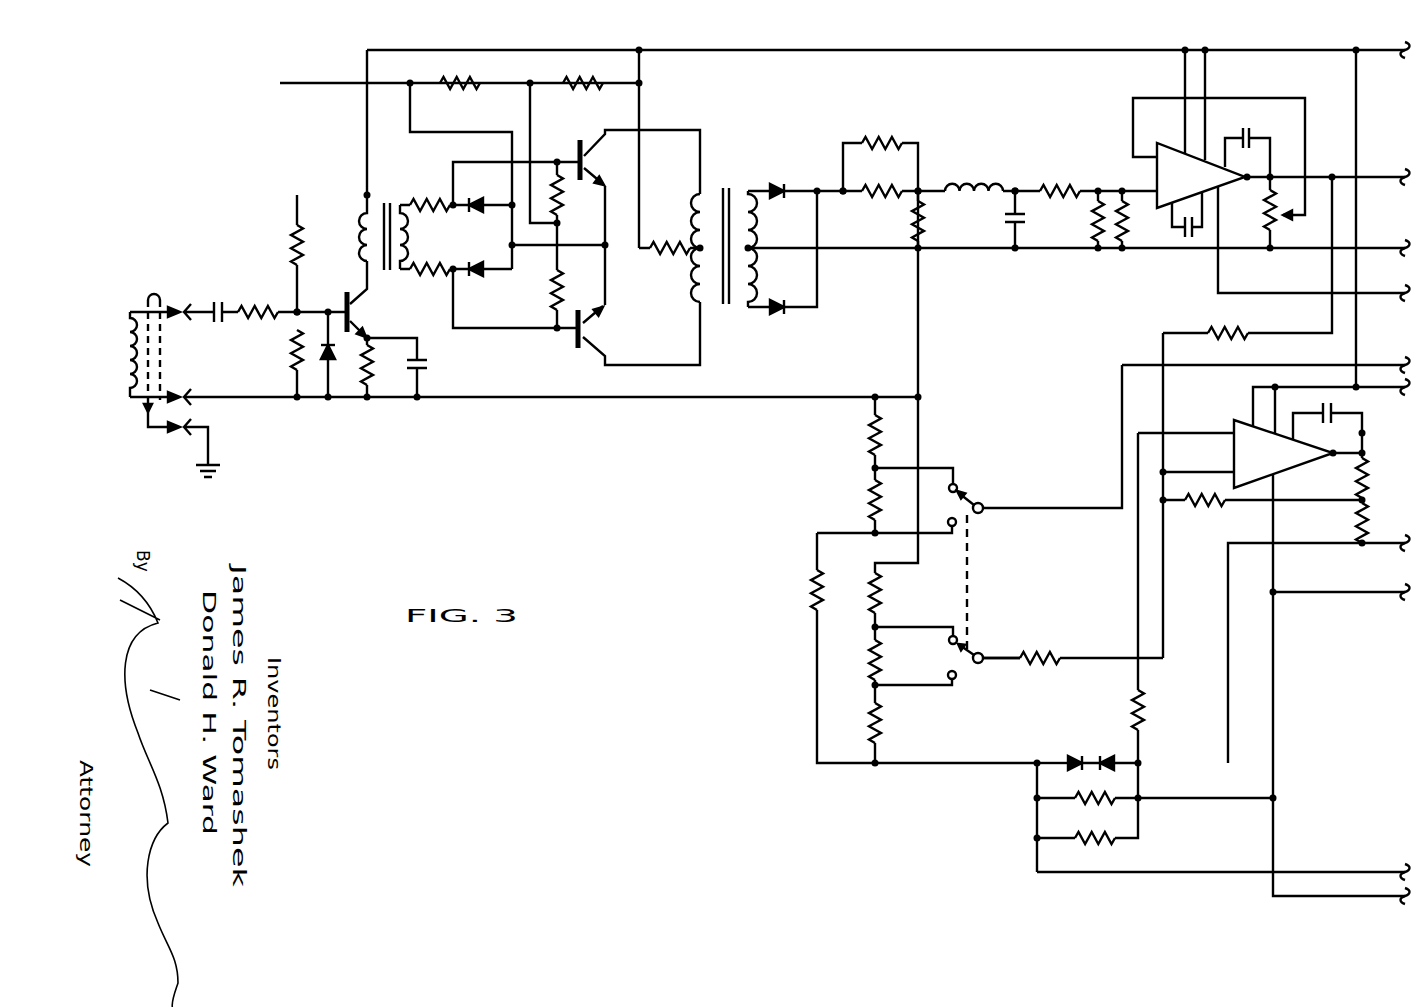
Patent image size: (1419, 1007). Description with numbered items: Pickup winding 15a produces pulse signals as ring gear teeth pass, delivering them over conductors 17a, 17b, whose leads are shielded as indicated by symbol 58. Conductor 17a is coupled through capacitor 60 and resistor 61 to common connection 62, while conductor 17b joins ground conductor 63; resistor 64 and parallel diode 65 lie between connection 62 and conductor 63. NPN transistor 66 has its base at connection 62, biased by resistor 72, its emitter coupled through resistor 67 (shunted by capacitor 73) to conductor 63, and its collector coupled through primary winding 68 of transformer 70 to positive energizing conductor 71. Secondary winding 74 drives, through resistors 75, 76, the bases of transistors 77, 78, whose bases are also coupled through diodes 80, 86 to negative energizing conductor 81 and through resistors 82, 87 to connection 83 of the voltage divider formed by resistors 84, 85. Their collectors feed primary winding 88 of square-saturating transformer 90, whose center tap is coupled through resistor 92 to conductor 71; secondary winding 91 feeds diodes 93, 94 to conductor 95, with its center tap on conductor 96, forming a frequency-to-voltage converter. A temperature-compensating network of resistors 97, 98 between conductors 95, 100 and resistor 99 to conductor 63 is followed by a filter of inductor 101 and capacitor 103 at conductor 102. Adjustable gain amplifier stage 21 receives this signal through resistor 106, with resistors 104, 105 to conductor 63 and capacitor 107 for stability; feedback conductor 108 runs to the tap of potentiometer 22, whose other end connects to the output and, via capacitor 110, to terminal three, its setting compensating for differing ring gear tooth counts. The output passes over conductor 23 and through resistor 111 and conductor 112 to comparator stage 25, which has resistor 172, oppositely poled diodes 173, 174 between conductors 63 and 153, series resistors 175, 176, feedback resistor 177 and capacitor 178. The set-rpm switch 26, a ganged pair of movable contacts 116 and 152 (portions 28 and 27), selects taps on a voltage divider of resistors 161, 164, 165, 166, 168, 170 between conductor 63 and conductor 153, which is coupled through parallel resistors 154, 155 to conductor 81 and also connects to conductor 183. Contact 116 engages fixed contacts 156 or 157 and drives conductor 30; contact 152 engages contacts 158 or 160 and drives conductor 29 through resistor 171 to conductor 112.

The winding 15a is at (122, 347).
The shielding 58 is at (162, 360).
The conductor 17a is at (189, 305).
The conductor 17b is at (192, 404).
The capacitor 60 is at (217, 306).
The resistor 61 is at (292, 301).
The common connection 62 is at (297, 312).
The common conductor 63 is at (1040, 251).
The resistor 64 is at (282, 363).
The diode 65 is at (339, 354).
The NPN-type transistor 66 is at (364, 299).
The resistor 67 is at (381, 367).
The primary winding 68 is at (350, 228).
The transformer 70 is at (398, 196).
The positive energizing conductor 71 is at (793, 50).
The resistor 72 is at (284, 253).
The capacitor 73 is at (409, 367).
The secondary winding 74 is at (420, 237).
The resistor 75 is at (426, 197).
The resistor 76 is at (426, 281).
The NPN-type transistor 77 is at (640, 162).
The NPN-type transistor 78 is at (639, 333).
The diode 80 is at (482, 193).
The negative energizing conductor 81 is at (328, 83).
The resistor 82 is at (569, 216).
The common connection 83 is at (529, 82).
The resistor 84 is at (460, 94).
The resistor 85 is at (583, 94).
The diode 86 is at (482, 281).
The resistor 87 is at (569, 299).
The primary winding 88 is at (697, 233).
The transformer 90 is at (739, 177).
The secondary winding 91 is at (760, 284).
The resistor 92 is at (669, 258).
The diode 93 is at (795, 179).
The diode 94 is at (782, 264).
The conductor 95 is at (840, 188).
The conductor 96 is at (942, 251).
The resistor 97 is at (880, 153).
The resistor 98 is at (880, 203).
The resistor 99 is at (930, 219).
The conductor 100 is at (920, 188).
The choke or inductor 101 is at (987, 172).
The conductor 102 is at (1016, 188).
The capacitor 103 is at (998, 219).
The resistor 104 is at (1080, 219).
The resistor 105 is at (1138, 219).
The resistor 106 is at (1086, 182).
The capacitor 107 is at (1176, 237).
The conductor 108 is at (1290, 98).
The capacitor 110 is at (1248, 141).
The adjustable gain amplifier stage 21 is at (1168, 130).
The potentiometer 22 is at (1256, 212).
The conductor 23 is at (1332, 321).
The resistor 111 is at (1205, 325).
The conductor 112 is at (1163, 345).
The comparator stage 25 is at (1231, 408).
The capacitor 178 is at (1322, 415).
The resistor 175 is at (1379, 476).
The resistor 176 is at (1379, 521).
The resistor 177 is at (1262, 511).
The conductor 30 is at (1390, 348).
The movable contact 116 is at (976, 502).
The fixed contact 156 is at (953, 482).
The fixed contact 157 is at (956, 526).
The movable contact 152 is at (982, 666).
The fixed contact 158 is at (949, 642).
The fixed contact 160 is at (954, 688).
The conductor 29 is at (1004, 658).
The resistor 171 is at (1040, 669).
The resistor 161 is at (859, 432).
The resistor 164 is at (892, 500).
The resistor 165 is at (825, 648).
The resistor 166 is at (892, 593).
The resistor 168 is at (892, 660).
The resistor 170 is at (892, 723).
The switch portion 28 is at (832, 487).
The set rpm switch 26 is at (1012, 587).
The switch portion 27 is at (852, 720).
The conductor 153 is at (988, 768).
The diode 173 is at (1063, 753).
The diode 174 is at (1115, 753).
The resistor 172 is at (1122, 710).
The resistor 154 is at (1094, 810).
The resistor 155 is at (1094, 850).
The conductor 183 is at (1370, 870).